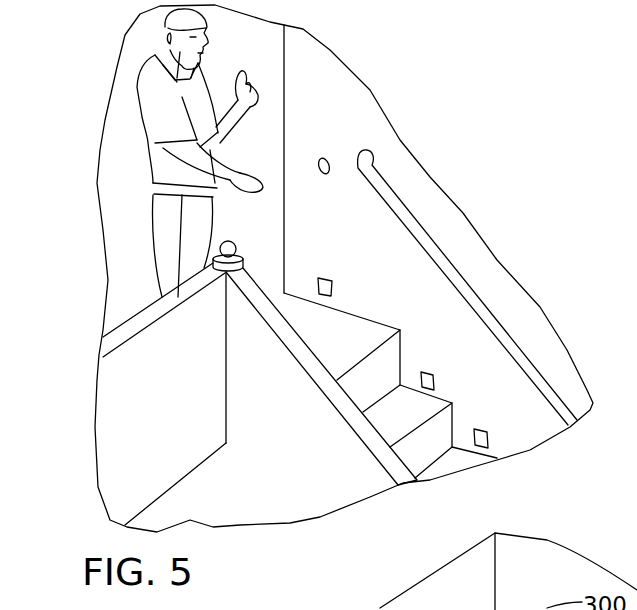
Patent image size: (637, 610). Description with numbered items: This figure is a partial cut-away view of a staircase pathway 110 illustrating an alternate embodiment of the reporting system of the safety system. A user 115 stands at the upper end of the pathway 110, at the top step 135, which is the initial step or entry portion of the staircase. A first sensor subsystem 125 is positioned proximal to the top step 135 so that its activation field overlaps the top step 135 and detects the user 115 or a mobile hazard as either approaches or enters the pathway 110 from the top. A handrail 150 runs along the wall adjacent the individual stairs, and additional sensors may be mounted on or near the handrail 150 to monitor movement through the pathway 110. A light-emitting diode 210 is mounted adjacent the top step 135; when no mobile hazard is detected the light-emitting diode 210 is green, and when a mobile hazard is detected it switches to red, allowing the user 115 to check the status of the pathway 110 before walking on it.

The pathway 110 is at (512, 436).
The user 115 is at (140, 97).
The first sensor subsystem 125 is at (322, 295).
The top step 135 is at (347, 337).
The handrail 150 is at (423, 238).
The light-emitting diode 210 is at (321, 162).